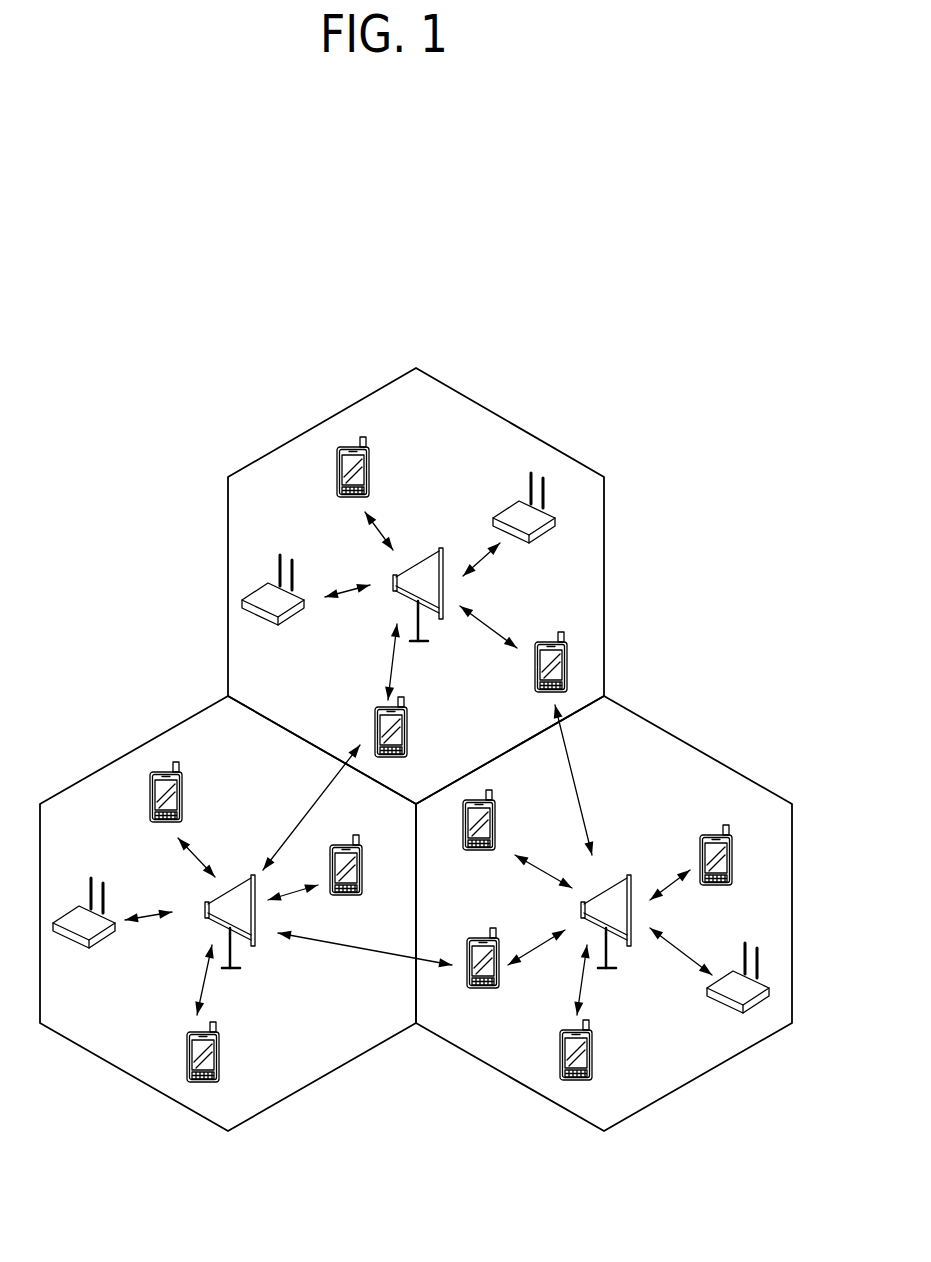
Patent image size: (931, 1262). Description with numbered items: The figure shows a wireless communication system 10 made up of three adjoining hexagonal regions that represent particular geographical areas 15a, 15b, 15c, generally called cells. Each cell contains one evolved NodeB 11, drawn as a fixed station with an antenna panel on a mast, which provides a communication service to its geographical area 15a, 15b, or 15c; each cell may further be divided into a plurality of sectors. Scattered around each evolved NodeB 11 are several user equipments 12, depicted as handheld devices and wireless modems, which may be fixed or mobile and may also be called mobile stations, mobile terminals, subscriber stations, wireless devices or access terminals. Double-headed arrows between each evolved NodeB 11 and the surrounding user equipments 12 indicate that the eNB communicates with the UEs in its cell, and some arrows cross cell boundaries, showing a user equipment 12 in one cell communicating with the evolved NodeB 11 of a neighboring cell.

The wireless communication system 10 is at (683, 481).
The evolved NodeB 11 is at (429, 567).
The user equipment 12 is at (369, 470).
The geographical area 15a is at (604, 573).
The geographical area 15b is at (722, 760).
The geographical area 15c is at (108, 757).